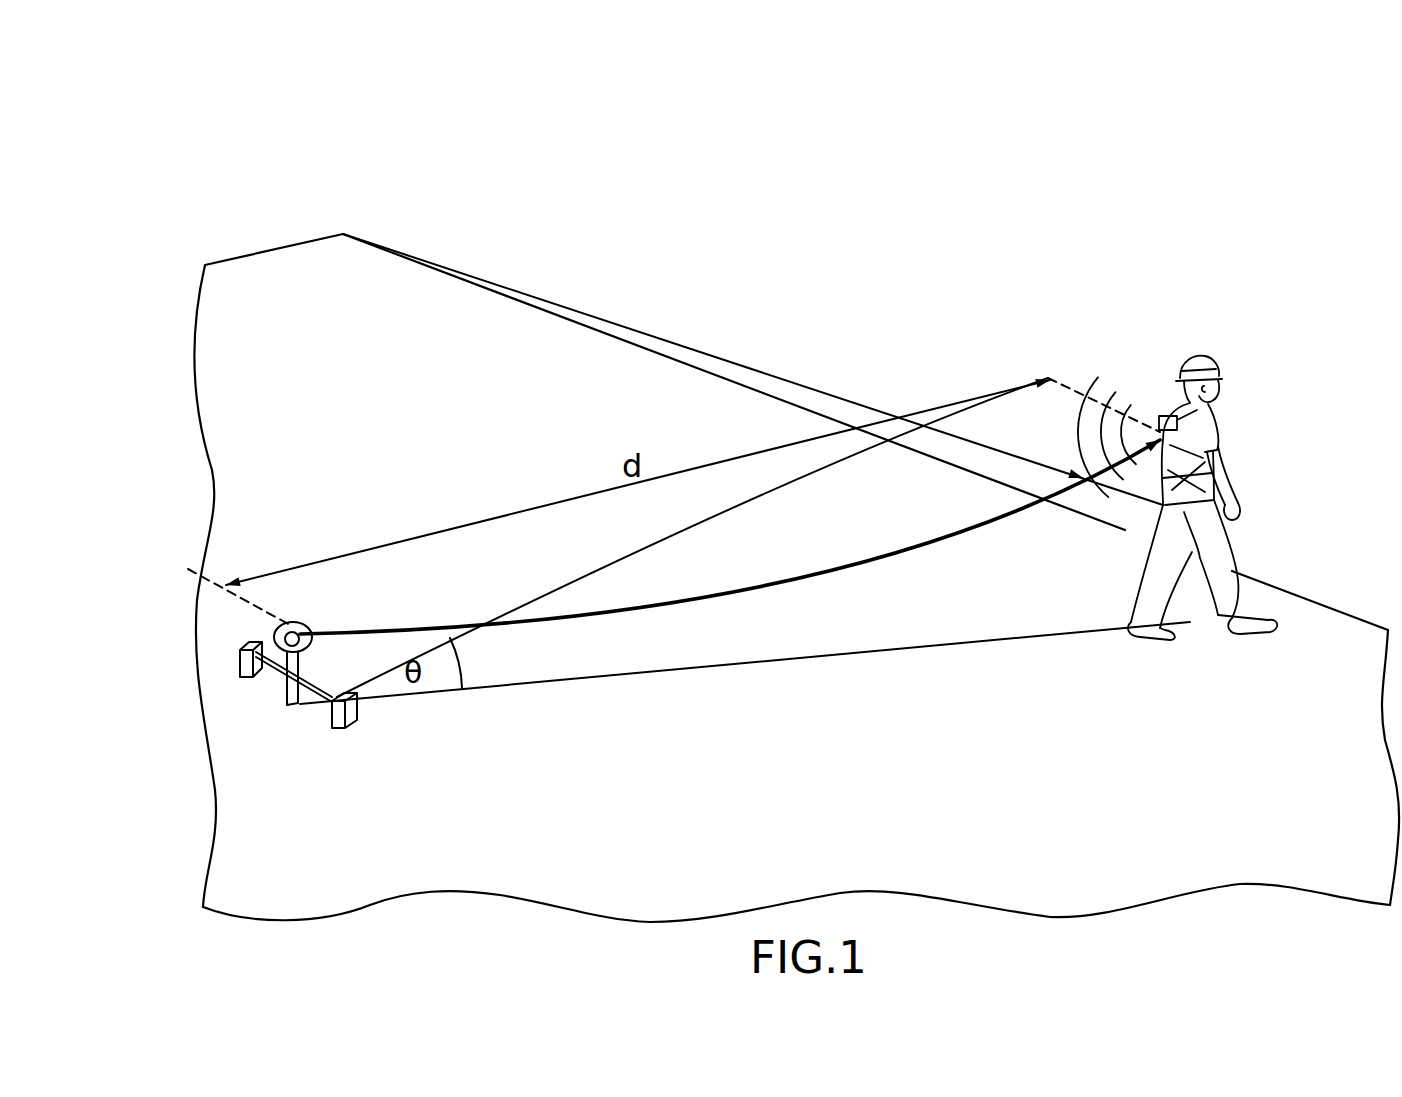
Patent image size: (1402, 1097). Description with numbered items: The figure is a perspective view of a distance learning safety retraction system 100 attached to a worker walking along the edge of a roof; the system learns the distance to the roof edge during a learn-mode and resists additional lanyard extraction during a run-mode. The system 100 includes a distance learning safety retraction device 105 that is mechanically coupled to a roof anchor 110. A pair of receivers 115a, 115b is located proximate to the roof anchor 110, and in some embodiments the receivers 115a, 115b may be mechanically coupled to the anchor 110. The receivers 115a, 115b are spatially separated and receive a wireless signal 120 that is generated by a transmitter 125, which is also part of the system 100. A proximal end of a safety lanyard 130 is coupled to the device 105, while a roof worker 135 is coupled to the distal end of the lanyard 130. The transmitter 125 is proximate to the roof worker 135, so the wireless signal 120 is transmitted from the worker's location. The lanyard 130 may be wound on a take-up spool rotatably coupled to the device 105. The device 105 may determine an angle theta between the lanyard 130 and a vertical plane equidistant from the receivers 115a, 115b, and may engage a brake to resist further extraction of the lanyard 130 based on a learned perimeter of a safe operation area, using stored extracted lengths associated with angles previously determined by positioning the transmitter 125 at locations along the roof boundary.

The distance learning safety retraction system 100 is at (197, 135).
The distance learning safety retraction device 105 is at (300, 622).
The roof anchor 110 is at (292, 703).
The receiver 115a is at (338, 730).
The receiver 115b is at (244, 677).
The wireless signal 120 is at (1068, 478).
The transmitter 125 is at (1163, 416).
The safety lanyard 130 is at (884, 550).
The roof worker 135 is at (1162, 565).